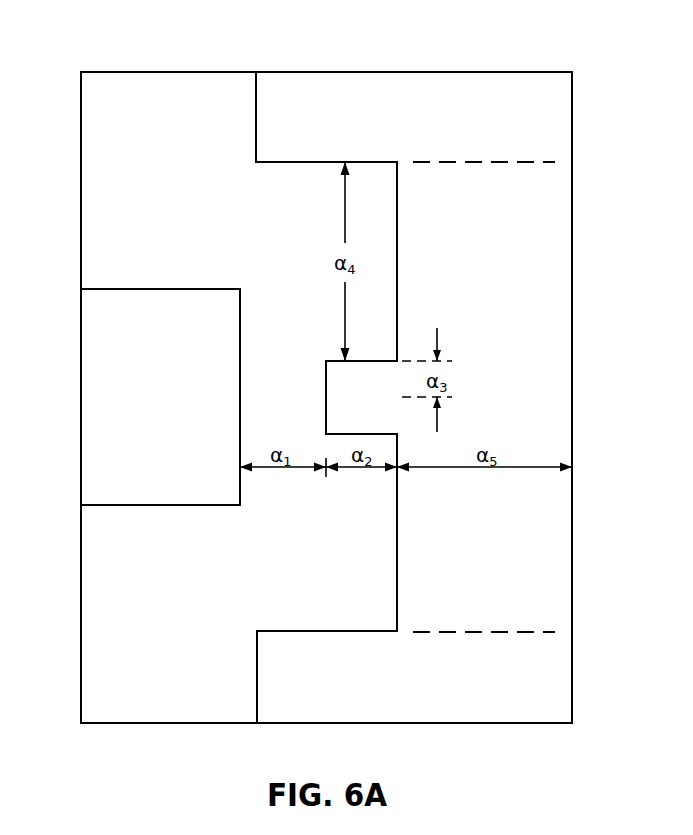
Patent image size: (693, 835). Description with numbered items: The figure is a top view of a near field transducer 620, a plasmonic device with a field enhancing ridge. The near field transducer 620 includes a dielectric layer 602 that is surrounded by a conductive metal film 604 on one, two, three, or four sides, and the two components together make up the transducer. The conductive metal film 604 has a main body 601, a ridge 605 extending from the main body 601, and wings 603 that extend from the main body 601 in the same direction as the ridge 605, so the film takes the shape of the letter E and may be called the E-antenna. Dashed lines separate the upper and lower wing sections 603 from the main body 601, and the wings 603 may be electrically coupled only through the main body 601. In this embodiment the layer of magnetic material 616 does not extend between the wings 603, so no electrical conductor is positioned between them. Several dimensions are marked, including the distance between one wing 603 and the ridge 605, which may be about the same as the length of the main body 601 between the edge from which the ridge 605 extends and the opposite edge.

The near field transducer 620 is at (563, 45).
The main body 601 is at (526, 345).
The dielectric layer 602 is at (188, 204).
The wings 603 is at (337, 118).
The conductive metal film 604 is at (499, 270).
The ridge 605 is at (345, 398).
The layer of magnetic material 616 is at (185, 406).